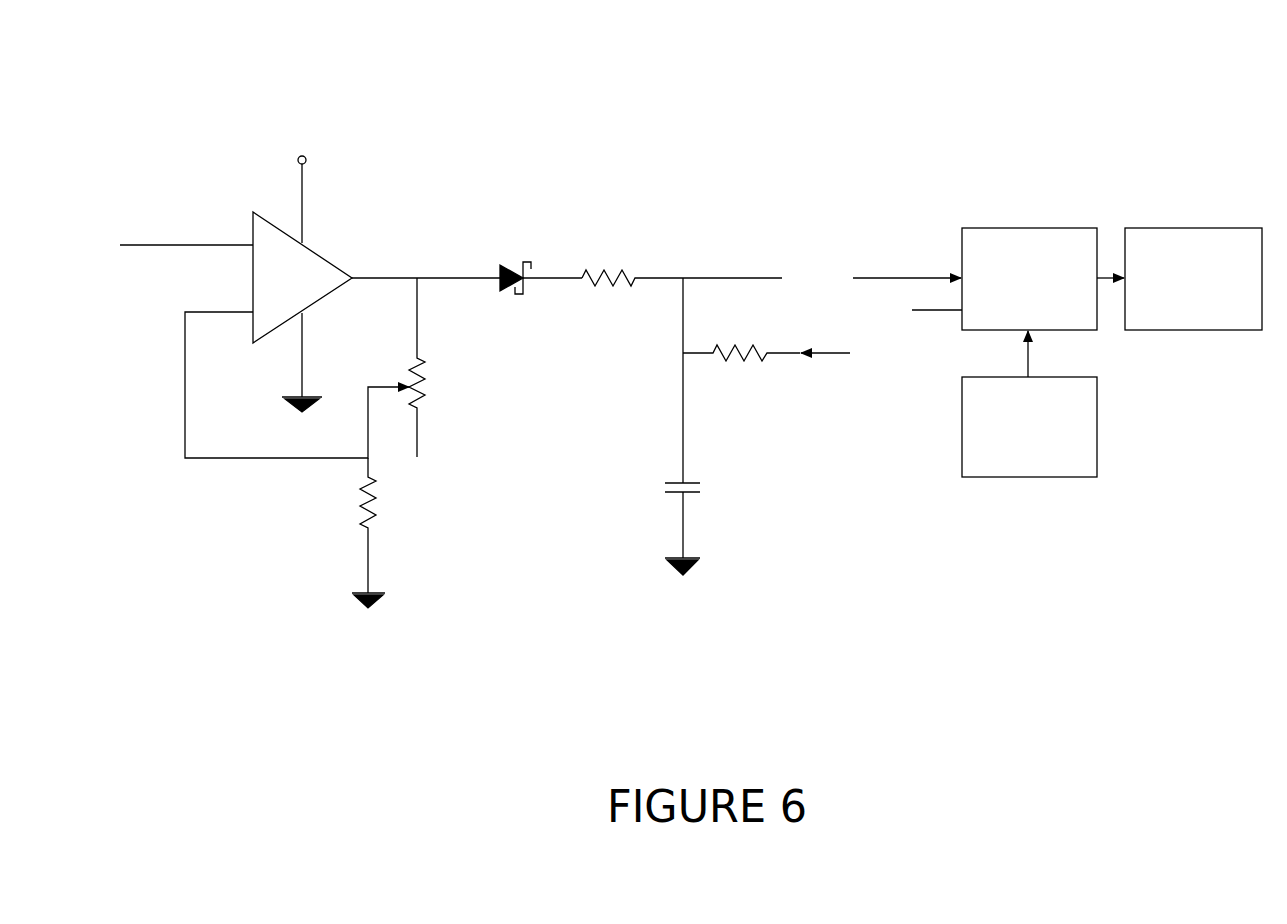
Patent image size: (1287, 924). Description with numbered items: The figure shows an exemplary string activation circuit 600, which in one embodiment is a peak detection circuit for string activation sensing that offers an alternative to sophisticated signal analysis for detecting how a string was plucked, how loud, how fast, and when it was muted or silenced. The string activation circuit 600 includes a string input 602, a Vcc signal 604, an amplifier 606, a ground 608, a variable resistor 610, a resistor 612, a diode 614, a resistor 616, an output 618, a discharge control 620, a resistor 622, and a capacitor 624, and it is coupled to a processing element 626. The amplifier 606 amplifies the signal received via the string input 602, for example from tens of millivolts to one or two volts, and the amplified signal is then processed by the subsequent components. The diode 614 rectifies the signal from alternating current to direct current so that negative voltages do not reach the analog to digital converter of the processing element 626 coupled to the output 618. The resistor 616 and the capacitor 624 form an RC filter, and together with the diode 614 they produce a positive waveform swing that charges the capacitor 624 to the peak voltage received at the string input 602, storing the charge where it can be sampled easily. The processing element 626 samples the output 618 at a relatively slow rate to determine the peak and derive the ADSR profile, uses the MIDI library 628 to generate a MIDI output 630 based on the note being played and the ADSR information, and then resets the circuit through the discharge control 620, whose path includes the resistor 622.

The string activation circuit 600 is at (96, 46).
The string input 602 is at (112, 244).
The Vcc signal 604 is at (309, 152).
The amplifier 606 is at (352, 262).
The ground 608 is at (312, 388).
The variable resistor 610 is at (440, 387).
The resistor 612 is at (392, 503).
The diode 614 is at (510, 254).
The resistor 616 is at (600, 254).
The output 618 is at (872, 279).
The discharge control 620 is at (906, 356).
The resistor 622 is at (742, 372).
The capacitor 624 is at (702, 508).
The processing element 626 is at (1013, 317).
The MIDI library 628 is at (1013, 465).
The MIDI output 630 is at (1177, 305).